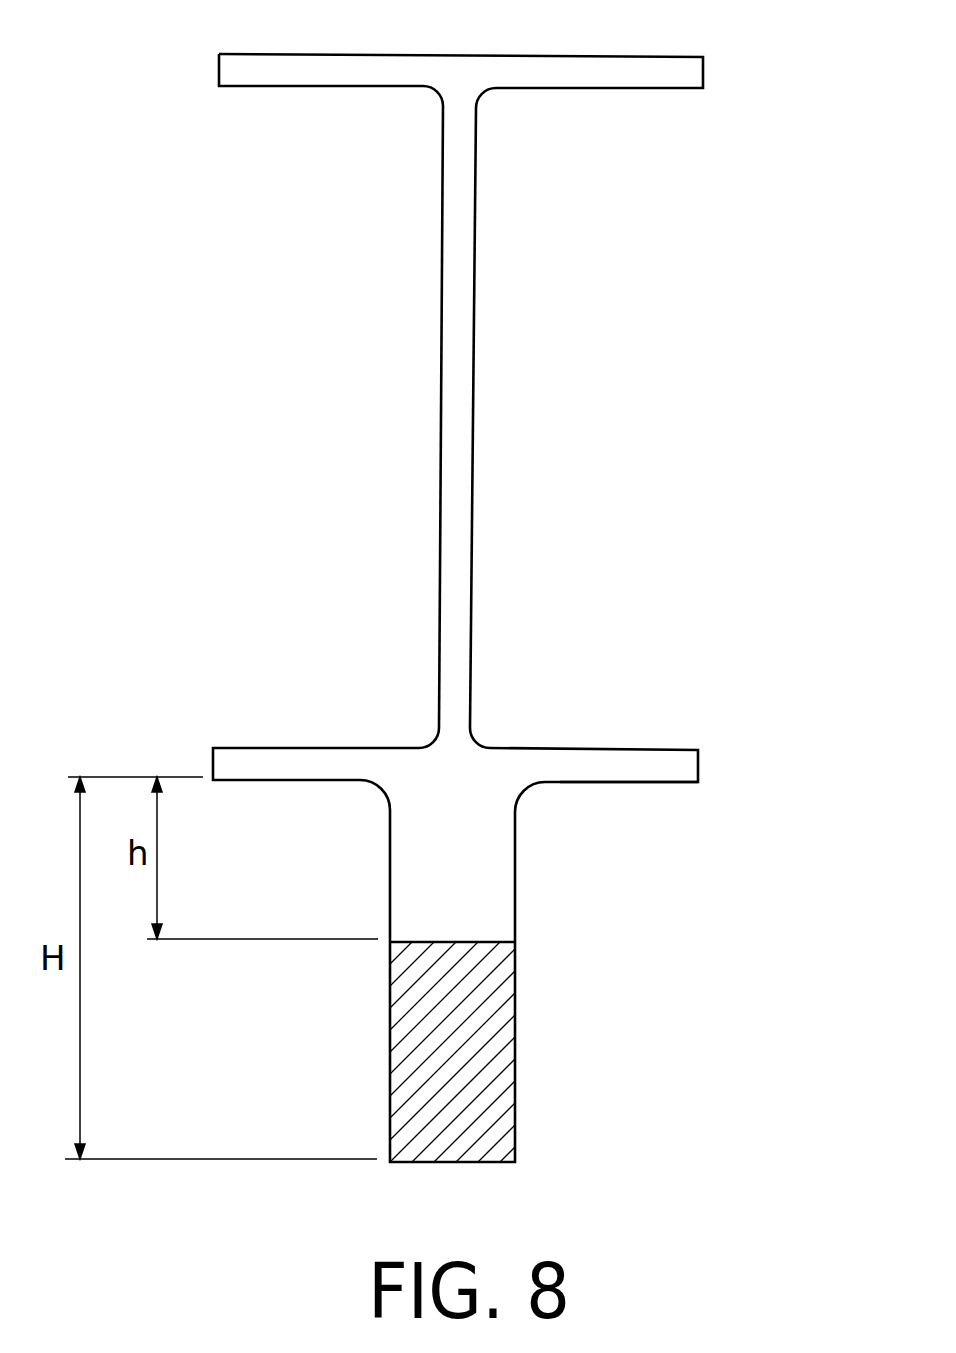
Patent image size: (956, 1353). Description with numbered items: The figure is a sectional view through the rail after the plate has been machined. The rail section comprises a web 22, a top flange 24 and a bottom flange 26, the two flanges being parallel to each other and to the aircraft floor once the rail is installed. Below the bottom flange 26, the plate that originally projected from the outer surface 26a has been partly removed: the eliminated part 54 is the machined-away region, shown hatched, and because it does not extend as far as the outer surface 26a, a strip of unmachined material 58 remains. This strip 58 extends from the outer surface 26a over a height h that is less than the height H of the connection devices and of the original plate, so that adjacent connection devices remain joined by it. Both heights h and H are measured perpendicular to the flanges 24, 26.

The web 22 is at (460, 395).
The top flange 24 is at (690, 70).
The bottom flange 26 is at (683, 763).
The outer surface of the bottom flange 26a is at (673, 785).
The eliminated part 54 is at (503, 1035).
The strip of unmachined material 58 is at (503, 870).